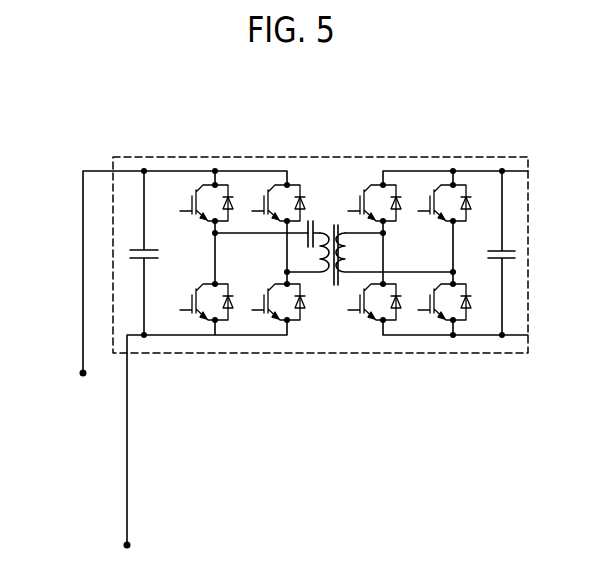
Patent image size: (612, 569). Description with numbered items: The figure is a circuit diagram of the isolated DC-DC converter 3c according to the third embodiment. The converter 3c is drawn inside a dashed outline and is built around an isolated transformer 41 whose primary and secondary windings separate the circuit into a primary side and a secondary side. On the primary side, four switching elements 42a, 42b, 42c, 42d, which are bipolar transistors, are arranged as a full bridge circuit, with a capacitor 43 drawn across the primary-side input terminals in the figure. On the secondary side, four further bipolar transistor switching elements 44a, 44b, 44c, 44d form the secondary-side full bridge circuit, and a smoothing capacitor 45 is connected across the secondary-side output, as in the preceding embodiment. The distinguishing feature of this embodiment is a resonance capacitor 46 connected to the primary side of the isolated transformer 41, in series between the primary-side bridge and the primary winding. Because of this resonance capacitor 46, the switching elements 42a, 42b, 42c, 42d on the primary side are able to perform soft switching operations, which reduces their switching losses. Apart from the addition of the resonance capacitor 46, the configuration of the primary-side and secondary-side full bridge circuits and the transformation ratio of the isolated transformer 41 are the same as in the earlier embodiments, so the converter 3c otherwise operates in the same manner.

The isolated DC-DC converter 3c is at (136, 156).
The isolated transformer 41 is at (336, 286).
The switching element 42a is at (196, 188).
The switching element 42b is at (268, 188).
The switching element 42c is at (193, 318).
The switching element 42d is at (265, 318).
The primary-side capacitor 43 is at (133, 249).
The switching element 44a is at (364, 188).
The switching element 44b is at (434, 188).
The switching element 44c is at (363, 318).
The switching element 44d is at (433, 318).
The smoothing capacitor 45 is at (505, 261).
The resonance capacitor 46 is at (311, 220).